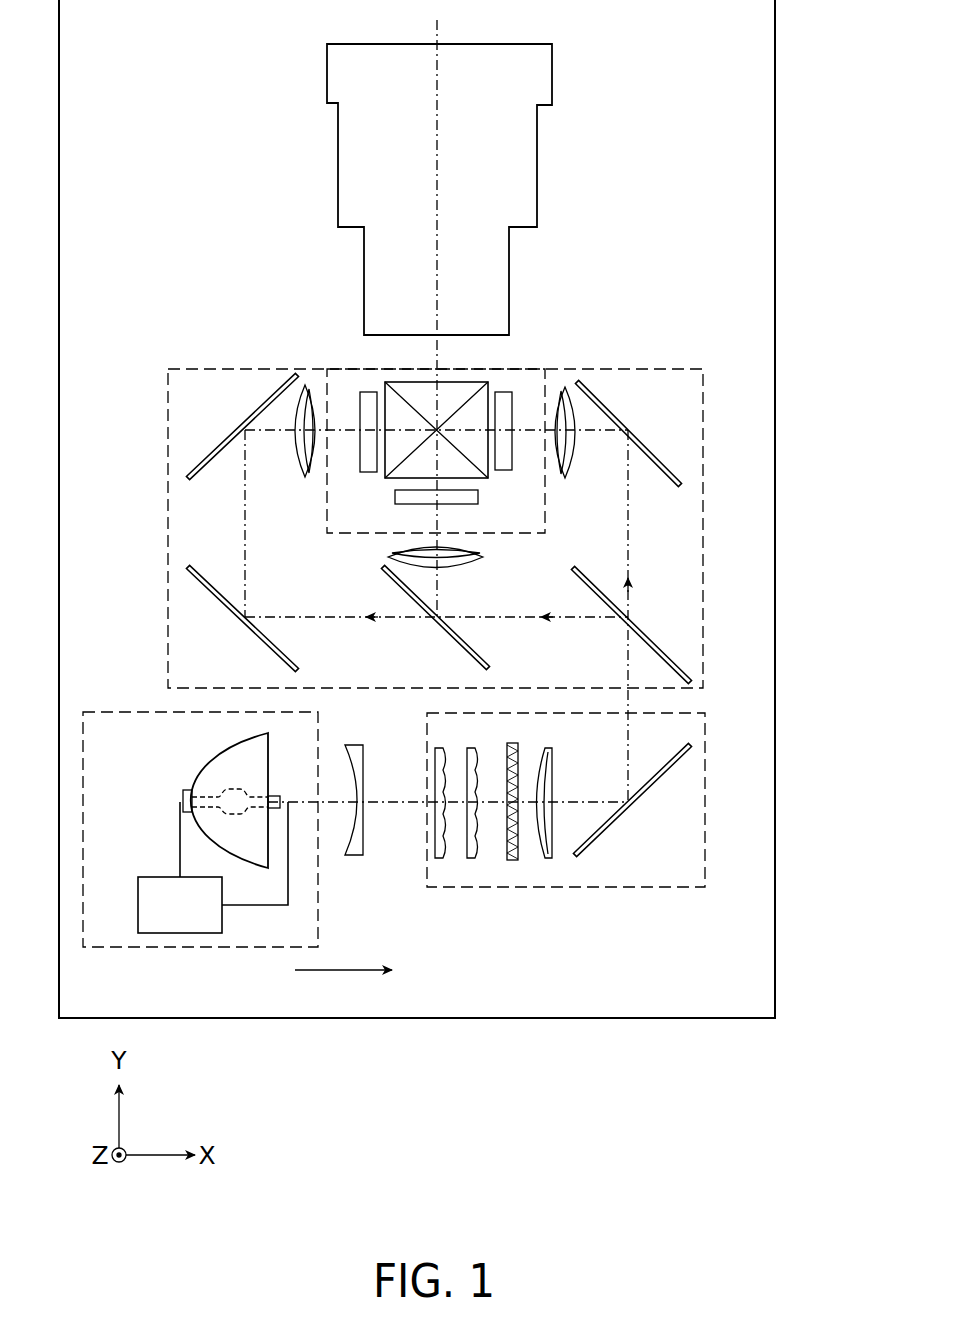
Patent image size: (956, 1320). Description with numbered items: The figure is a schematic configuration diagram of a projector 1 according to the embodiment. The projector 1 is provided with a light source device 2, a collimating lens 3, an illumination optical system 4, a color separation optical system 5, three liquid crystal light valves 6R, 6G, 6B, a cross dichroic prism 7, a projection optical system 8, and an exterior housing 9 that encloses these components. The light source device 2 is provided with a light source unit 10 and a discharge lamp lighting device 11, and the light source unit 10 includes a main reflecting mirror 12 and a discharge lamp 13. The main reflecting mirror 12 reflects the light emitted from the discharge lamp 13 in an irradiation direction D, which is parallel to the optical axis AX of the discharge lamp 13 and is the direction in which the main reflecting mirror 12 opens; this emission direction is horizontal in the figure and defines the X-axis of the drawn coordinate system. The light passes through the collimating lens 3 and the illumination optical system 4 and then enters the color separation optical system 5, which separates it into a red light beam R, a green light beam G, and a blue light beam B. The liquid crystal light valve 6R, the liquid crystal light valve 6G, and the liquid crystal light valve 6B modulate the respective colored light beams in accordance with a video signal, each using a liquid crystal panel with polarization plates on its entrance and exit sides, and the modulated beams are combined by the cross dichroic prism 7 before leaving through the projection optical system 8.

The projector 1 is at (797, 71).
The exterior housing 9 is at (775, 211).
The projection optical system 8 is at (538, 195).
The cross dichroic prism 7 is at (428, 381).
The liquid crystal light valve 6B is at (370, 473).
The liquid crystal light valve 6R is at (505, 391).
The liquid crystal light valve 6G is at (462, 504).
The color separation optical system 5 is at (703, 674).
The illumination optical system 4 is at (705, 853).
The collimating lens 3 is at (358, 858).
The light source device 2 is at (170, 948).
The light source unit 10 is at (178, 768).
The discharge lamp lighting device 11 is at (138, 910).
The main reflecting mirror 12 is at (207, 767).
The discharge lamp 13 is at (275, 790).
The blue light beam B is at (245, 545).
The red light beam R is at (628, 545).
The green light beam G is at (438, 580).
The optical axis AX is at (400, 805).
The irradiation direction D is at (356, 973).